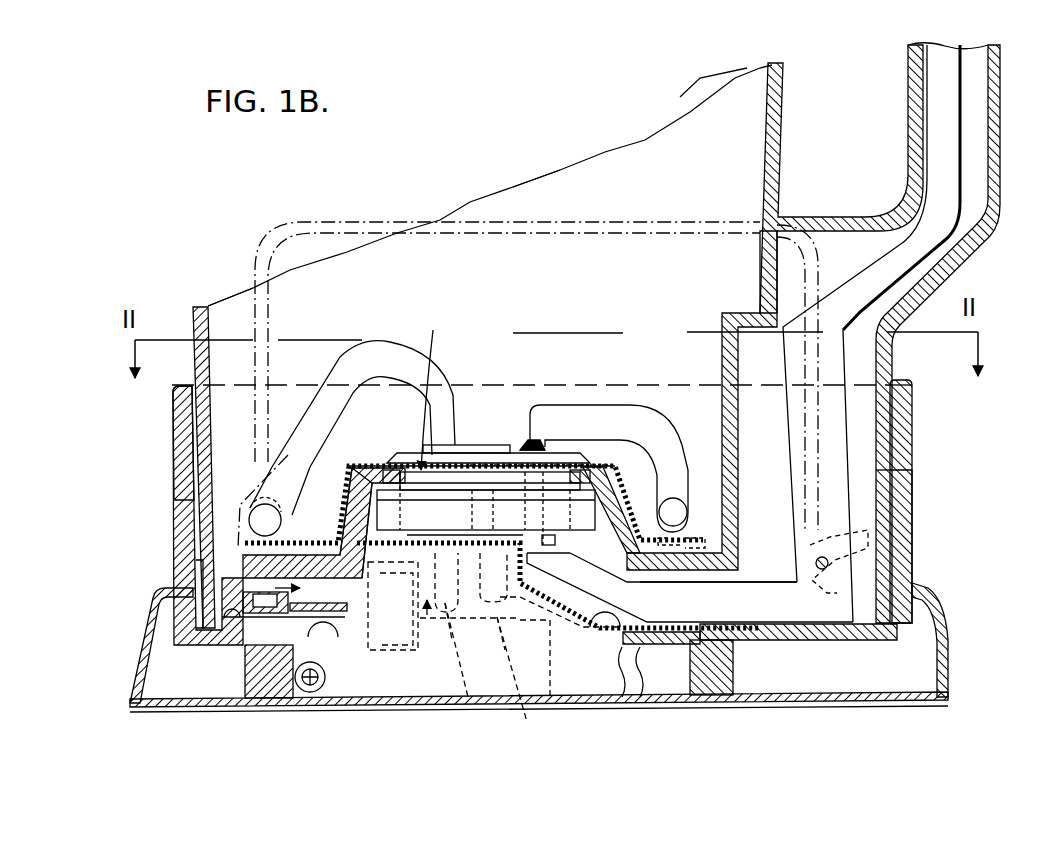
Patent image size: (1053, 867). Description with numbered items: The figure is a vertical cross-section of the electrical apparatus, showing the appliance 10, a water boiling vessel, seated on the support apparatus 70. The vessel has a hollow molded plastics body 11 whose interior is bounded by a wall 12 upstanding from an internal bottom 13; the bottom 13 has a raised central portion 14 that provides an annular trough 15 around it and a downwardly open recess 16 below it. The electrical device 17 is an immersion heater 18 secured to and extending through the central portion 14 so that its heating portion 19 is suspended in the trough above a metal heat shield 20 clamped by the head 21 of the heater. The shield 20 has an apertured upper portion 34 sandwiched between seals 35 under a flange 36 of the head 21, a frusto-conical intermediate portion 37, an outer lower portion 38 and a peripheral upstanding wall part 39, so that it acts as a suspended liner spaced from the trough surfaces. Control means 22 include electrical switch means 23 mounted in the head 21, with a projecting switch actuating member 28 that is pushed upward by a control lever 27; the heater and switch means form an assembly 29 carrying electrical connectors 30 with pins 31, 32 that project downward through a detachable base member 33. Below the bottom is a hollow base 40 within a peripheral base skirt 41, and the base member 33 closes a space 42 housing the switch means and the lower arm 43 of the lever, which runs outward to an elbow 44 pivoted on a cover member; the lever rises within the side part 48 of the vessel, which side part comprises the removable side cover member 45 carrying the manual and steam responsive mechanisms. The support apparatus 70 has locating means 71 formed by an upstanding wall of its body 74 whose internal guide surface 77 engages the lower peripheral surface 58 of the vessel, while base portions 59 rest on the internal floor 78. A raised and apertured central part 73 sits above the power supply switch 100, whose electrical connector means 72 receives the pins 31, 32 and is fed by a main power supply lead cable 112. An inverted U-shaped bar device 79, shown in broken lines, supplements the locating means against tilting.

The appliance 10 is at (565, 186).
The hollow molded plastics body 11 is at (564, 160).
The wall 12 is at (760, 262).
The internal bottom 13 is at (240, 588).
The raised central portion 14 is at (356, 466).
The annular trough 15 is at (326, 522).
The downwardly open recess 16 is at (618, 560).
The electrical device 17 is at (478, 423).
The immersion heater 18 is at (365, 340).
The heating portion 19 is at (674, 508).
The metal heat shield 20 is at (653, 430).
The head 21 is at (502, 445).
The control means 22 is at (735, 594).
The electrical switch means 23 is at (547, 456).
The control lever 27 is at (830, 427).
The projecting switch actuating member 28 is at (547, 547).
The assembly 29 is at (434, 388).
The electrical connectors 30 is at (450, 700).
The pin 31 is at (501, 633).
The pin 32 is at (448, 621).
The detachable base member 33 is at (343, 600).
The apertured upper portion 34 is at (575, 460).
The seals 35 is at (390, 468).
The flange 36 is at (402, 470).
The frusto-conical intermediate portion 37 is at (342, 500).
The outer lower portion 38 is at (274, 506).
The peripheral upstanding wall part 39 is at (752, 462).
The hollow base 40 is at (652, 122).
The peripheral base skirt 41 is at (177, 596).
The space 42 is at (627, 488).
The lower part or arm 43 is at (692, 611).
The elbow 44 is at (832, 603).
The removable side cover member 45 is at (953, 280).
The side part 48 is at (765, 155).
The peripheral surface 58 is at (152, 618).
The base portions 59 is at (235, 627).
The support apparatus 70 is at (165, 464).
The locating means 71 is at (900, 500).
The electrical connector means 72 is at (420, 680).
The raised and apertured central part 73 is at (399, 557).
The body 74 is at (913, 582).
The internal guide surface 77 is at (197, 390).
The internal floor 78 is at (326, 675).
The upstanding device 79 is at (348, 227).
The power supply switch 100 is at (393, 708).
The main power supply lead cable 112 is at (310, 712).